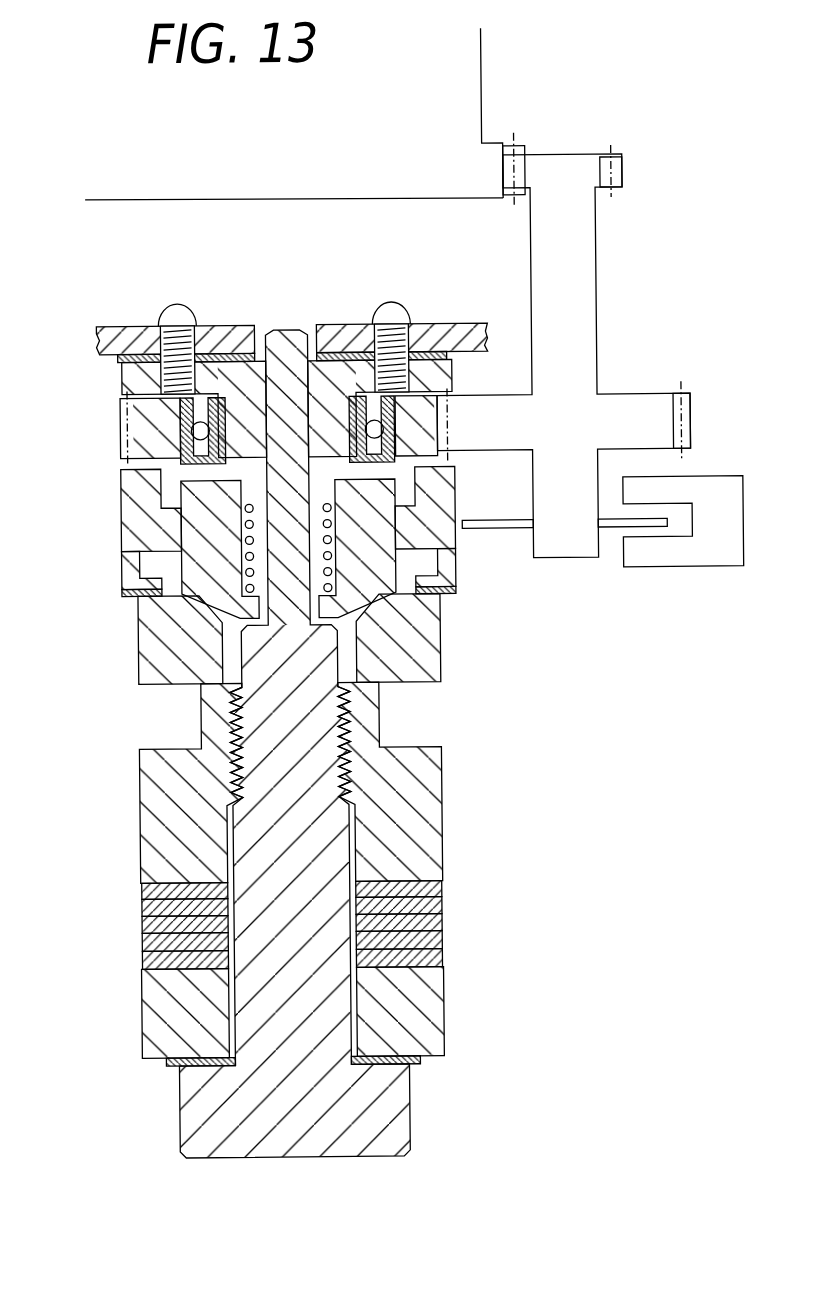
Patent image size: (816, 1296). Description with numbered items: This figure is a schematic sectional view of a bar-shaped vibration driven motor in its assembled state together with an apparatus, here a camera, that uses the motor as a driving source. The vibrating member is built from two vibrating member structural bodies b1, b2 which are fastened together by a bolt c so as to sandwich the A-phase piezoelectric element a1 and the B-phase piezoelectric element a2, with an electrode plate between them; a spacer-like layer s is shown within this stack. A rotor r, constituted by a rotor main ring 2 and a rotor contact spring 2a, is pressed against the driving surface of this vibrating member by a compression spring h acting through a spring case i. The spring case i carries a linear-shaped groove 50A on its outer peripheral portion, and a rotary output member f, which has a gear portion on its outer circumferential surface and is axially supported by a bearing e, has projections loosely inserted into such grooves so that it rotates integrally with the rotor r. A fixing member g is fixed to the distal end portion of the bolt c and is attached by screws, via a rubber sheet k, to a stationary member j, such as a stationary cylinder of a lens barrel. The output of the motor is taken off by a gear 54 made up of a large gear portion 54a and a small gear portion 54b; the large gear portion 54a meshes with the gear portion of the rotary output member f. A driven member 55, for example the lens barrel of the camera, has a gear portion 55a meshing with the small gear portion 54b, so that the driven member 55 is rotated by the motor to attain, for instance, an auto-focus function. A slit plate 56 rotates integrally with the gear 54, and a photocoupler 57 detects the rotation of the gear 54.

The stationary member j is at (137, 333).
The rubber sheet k is at (120, 357).
The fixing member g is at (130, 373).
The rotary output member f is at (122, 413).
The bearing e is at (188, 434).
The rotor r is at (108, 476).
The linear-shaped groove 50A is at (120, 502).
The rotor main ring 2 is at (120, 517).
The rotor contact spring 2a is at (120, 563).
The spring case i is at (192, 537).
The compression spring h is at (138, 592).
The A-phase piezoelectric element a1 is at (131, 883).
The B-phase piezoelectric element a2 is at (131, 918).
The spacer s is at (137, 966).
The vibrating member structural body b1 is at (426, 788).
The vibrating member structural body b2 is at (434, 1004).
The bolt c is at (393, 1099).
The driven member 55 is at (464, 102).
The gear portion 55a is at (529, 151).
The small gear portion 54b is at (626, 175).
The gear 54 is at (582, 280).
The large gear portion 54a is at (686, 392).
The slit plate 56 is at (478, 531).
The photocoupler 57 is at (651, 565).